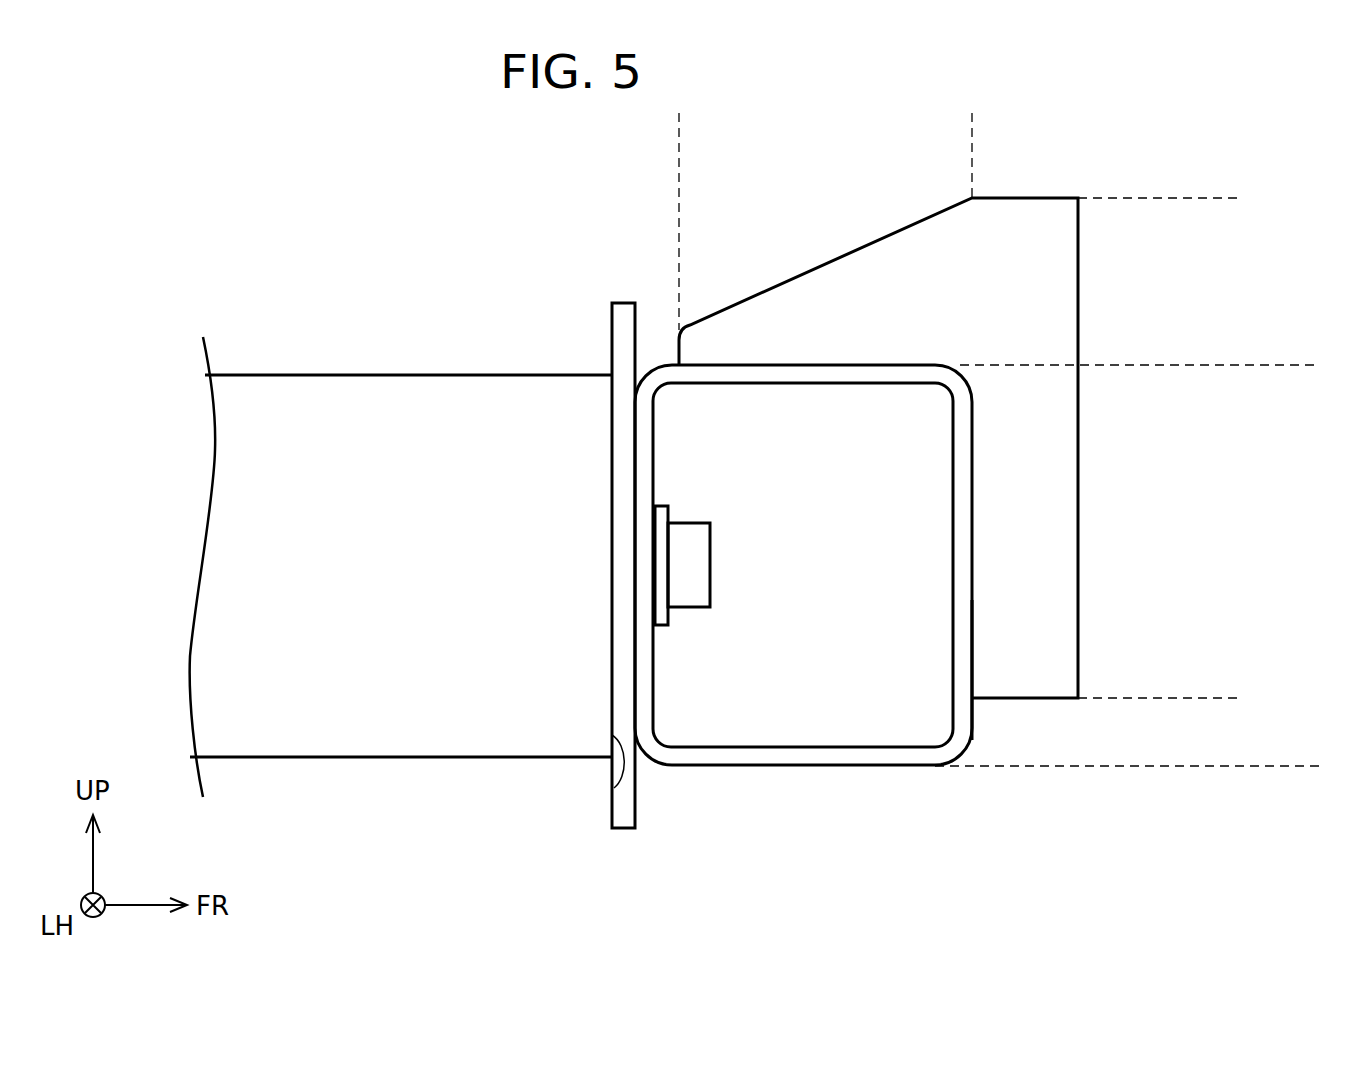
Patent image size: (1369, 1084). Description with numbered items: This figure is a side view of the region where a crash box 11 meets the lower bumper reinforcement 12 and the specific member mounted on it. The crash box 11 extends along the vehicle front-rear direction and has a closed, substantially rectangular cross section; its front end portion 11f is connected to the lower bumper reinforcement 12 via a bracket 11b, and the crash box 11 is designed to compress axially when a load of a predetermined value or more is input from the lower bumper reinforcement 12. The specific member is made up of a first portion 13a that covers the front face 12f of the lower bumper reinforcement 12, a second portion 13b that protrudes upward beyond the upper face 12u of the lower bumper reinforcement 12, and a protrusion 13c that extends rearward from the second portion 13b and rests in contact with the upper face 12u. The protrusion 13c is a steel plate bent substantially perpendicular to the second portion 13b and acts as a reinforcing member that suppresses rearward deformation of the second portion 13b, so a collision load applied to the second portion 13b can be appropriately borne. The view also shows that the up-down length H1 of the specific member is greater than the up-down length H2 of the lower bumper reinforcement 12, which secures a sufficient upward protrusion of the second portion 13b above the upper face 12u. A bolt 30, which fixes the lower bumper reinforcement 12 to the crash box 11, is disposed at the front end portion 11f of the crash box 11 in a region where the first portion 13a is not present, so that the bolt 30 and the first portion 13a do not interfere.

The crash box 11 is at (393, 740).
The bracket 11b is at (623, 817).
The front end portion of the crash box 11f is at (616, 788).
The lower bumper reinforcement 12 is at (827, 815).
The upper face of the lower bumper reinforcement 12u is at (790, 363).
The front face of the lower bumper reinforcement 12f is at (972, 648).
The bolt 30 is at (693, 578).
The first portion 13a is at (1153, 365).
The second portion 13b is at (1153, 198).
The protrusion 13c is at (959, 128).
The length of the specific member in the up-down direction H1 is at (1238, 685).
The length of the lower bumper reinforcement in the up-down direction H2 is at (1313, 365).